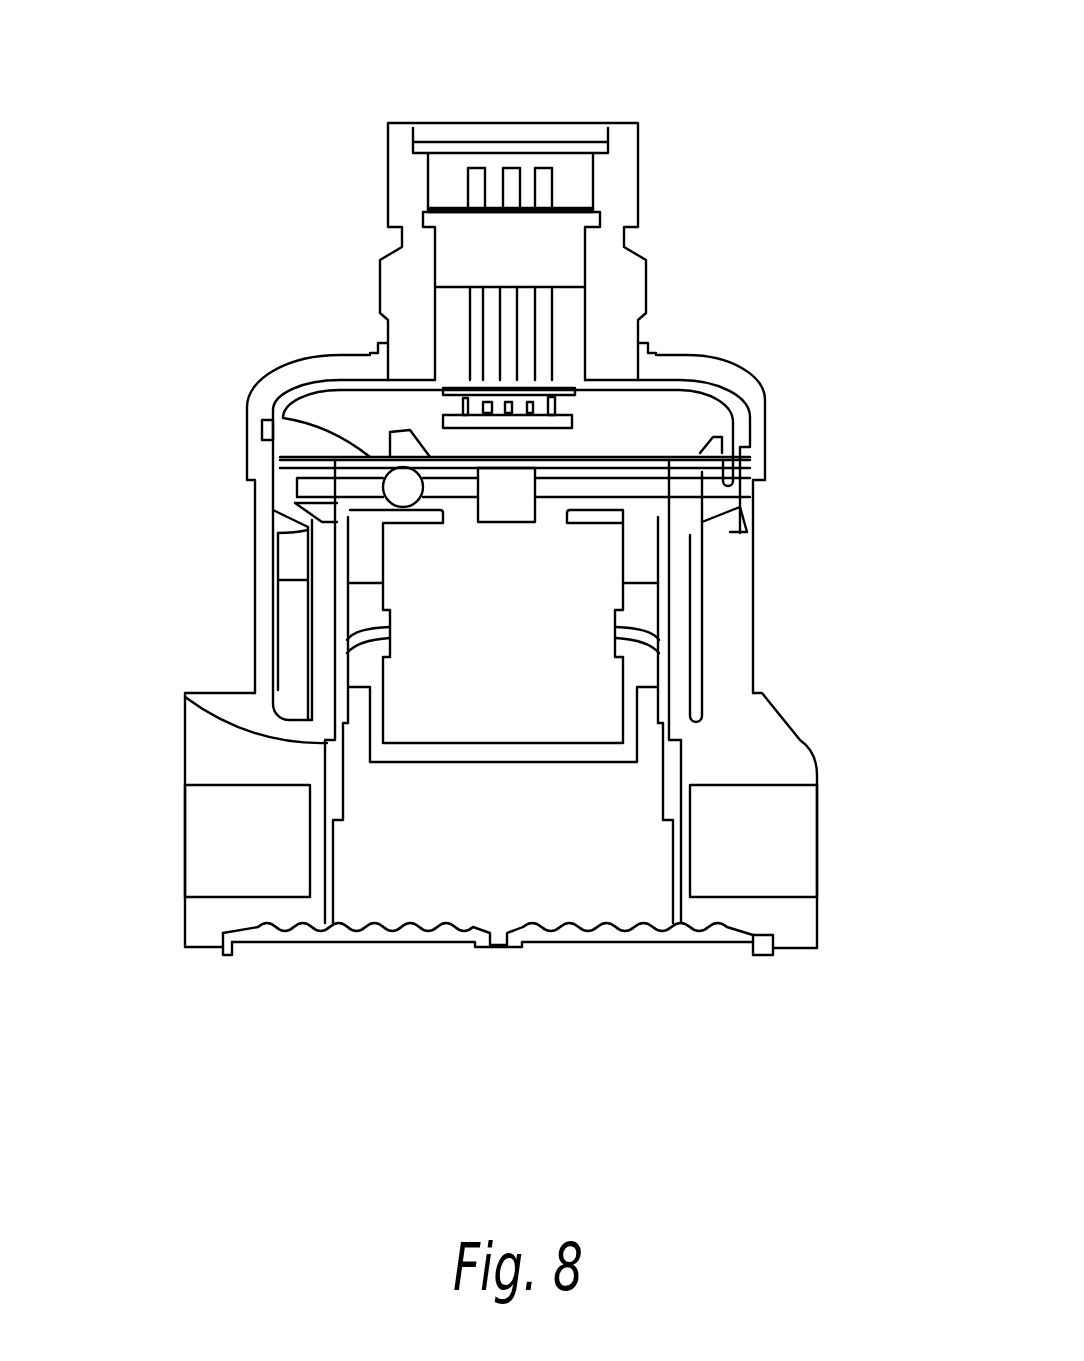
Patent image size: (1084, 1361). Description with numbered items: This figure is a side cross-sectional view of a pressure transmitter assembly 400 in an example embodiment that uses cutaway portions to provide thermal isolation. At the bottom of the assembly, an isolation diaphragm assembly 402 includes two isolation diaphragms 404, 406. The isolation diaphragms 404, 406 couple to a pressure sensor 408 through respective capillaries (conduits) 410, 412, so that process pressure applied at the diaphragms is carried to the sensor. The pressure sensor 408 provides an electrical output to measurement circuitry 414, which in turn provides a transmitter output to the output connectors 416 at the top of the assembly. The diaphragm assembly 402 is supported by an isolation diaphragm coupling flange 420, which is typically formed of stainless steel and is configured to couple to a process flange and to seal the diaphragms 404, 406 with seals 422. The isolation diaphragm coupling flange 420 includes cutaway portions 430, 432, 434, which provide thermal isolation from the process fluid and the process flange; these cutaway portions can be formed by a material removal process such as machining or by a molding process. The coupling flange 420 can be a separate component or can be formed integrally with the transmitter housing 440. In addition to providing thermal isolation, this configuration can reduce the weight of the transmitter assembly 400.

The pressure transmitter assembly 400 is at (348, 122).
The isolation diaphragm assembly 402 is at (168, 923).
The isolation diaphragm 404 is at (370, 925).
The isolation diaphragm 406 is at (637, 930).
The pressure sensor 408 is at (607, 572).
The capillary 410 is at (183, 695).
The capillary 412 is at (660, 768).
The measurement circuitry 414 is at (297, 420).
The transmitter output connectors 416 is at (480, 170).
The isolation diaphragm coupling flange 420 is at (168, 863).
The seals 422 is at (242, 948).
The cutaway portion 430 is at (195, 798).
The cutaway portion 432 is at (503, 823).
The cutaway portion 434 is at (793, 873).
The transmitter housing 440 is at (255, 563).